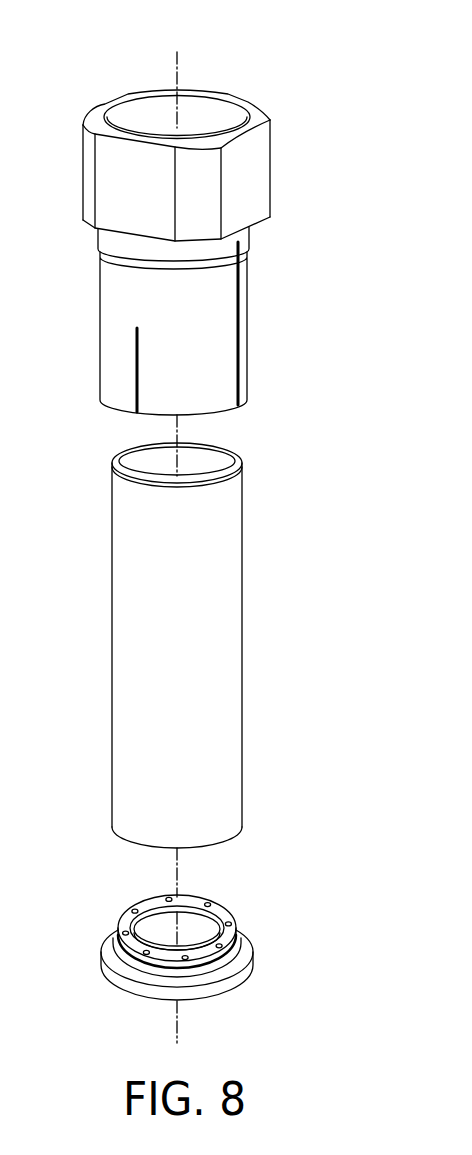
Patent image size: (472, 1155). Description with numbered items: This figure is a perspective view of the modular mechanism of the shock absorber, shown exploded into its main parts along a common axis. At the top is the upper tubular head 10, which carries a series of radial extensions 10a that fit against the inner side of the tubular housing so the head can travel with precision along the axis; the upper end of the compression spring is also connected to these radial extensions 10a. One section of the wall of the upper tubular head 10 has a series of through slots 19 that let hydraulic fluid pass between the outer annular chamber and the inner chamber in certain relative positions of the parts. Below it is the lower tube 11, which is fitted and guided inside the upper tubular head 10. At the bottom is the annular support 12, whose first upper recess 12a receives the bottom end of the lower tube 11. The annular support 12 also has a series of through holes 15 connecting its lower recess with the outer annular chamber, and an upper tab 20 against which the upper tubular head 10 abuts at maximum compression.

The upper tubular head 10 is at (215, 225).
The radial extensions 10a is at (257, 163).
The through slots 19 is at (237, 312).
The lower tube 11 is at (249, 612).
The annular support 12 is at (171, 927).
The first upper recess 12a is at (195, 920).
The through holes 15 is at (183, 954).
The upper tab 20 is at (222, 916).